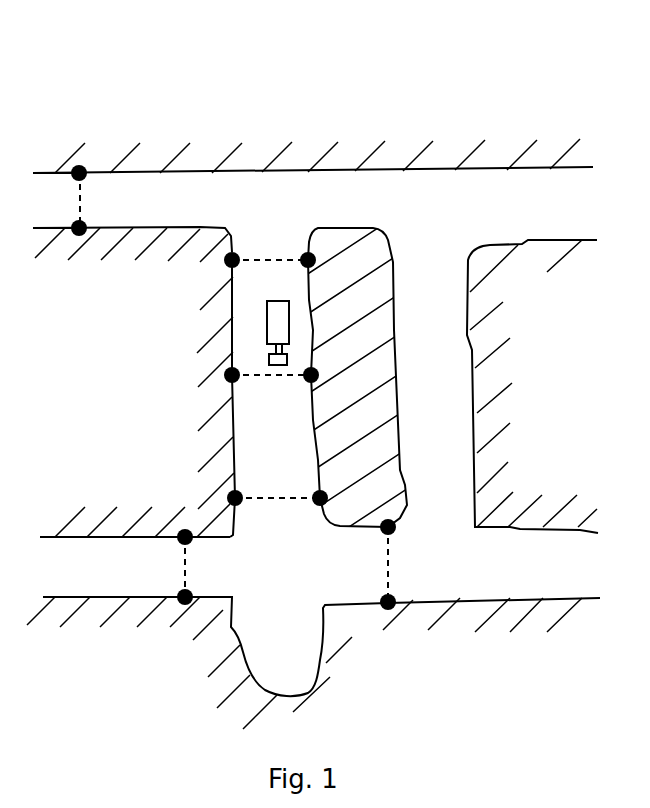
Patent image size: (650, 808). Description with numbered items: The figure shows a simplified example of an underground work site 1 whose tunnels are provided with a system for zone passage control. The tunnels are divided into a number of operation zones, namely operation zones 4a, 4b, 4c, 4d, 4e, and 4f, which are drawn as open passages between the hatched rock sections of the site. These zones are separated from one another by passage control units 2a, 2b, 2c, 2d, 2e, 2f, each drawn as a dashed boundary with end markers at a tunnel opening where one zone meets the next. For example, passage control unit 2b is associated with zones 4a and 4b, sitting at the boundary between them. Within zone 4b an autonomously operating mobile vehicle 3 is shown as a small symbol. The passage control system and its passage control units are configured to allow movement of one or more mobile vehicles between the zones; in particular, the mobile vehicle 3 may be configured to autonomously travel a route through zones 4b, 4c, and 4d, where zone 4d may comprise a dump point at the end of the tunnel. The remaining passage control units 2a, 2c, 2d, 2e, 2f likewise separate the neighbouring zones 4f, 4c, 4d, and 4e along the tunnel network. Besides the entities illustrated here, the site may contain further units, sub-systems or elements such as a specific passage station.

The underground work site 1 is at (307, 112).
The passage control unit 2a is at (80, 198).
The passage control unit 2b is at (237, 272).
The passage control unit 2c is at (246, 378).
The passage control unit 2d is at (275, 498).
The passage control unit 2e is at (178, 592).
The passage control unit 2f is at (398, 580).
The autonomously operating mobile vehicle 3 is at (267, 323).
The operation zone 4a is at (264, 209).
The operation zone 4b is at (292, 291).
The operation zone 4c is at (286, 421).
The operation zone 4d is at (293, 561).
The operation zone 4e is at (117, 579).
The operation zone 4f is at (58, 212).